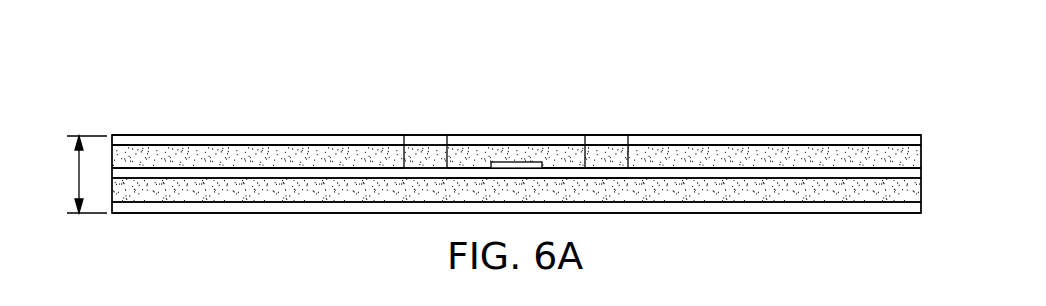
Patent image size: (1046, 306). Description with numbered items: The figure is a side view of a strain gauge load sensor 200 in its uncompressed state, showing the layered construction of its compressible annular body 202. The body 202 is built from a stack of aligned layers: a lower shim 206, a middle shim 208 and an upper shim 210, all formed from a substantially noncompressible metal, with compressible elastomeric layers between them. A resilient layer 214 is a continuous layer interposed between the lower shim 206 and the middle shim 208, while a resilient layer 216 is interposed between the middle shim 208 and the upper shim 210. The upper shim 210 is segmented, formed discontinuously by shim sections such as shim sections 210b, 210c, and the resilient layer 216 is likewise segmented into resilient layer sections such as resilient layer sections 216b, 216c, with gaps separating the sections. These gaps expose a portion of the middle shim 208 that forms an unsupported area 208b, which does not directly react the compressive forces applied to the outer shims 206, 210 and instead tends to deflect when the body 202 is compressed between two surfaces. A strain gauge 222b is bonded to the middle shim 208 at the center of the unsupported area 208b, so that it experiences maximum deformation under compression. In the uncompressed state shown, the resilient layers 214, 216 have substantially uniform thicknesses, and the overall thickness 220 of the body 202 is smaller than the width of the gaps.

The load sensor 200 is at (668, 59).
The compressible annular body 202 is at (134, 135).
The lower shim 206 is at (188, 205).
The middle shim 208 is at (270, 176).
The unsupported area 208b is at (555, 168).
The upper shim 210 is at (195, 135).
The shim section 210b is at (457, 142).
The shim section 210c is at (255, 143).
The resilient layer 214 is at (345, 190).
The resilient layer 216 is at (315, 155).
The resilient layer section 216b is at (729, 153).
The resilient layer section 216c is at (375, 155).
The thickness 220 is at (78, 174).
The strain gauge 222b is at (510, 162).